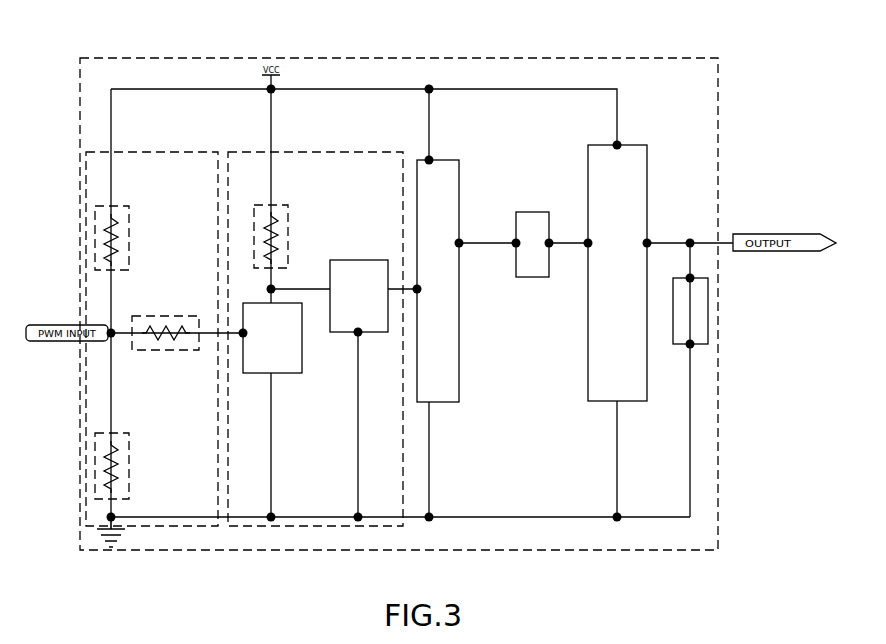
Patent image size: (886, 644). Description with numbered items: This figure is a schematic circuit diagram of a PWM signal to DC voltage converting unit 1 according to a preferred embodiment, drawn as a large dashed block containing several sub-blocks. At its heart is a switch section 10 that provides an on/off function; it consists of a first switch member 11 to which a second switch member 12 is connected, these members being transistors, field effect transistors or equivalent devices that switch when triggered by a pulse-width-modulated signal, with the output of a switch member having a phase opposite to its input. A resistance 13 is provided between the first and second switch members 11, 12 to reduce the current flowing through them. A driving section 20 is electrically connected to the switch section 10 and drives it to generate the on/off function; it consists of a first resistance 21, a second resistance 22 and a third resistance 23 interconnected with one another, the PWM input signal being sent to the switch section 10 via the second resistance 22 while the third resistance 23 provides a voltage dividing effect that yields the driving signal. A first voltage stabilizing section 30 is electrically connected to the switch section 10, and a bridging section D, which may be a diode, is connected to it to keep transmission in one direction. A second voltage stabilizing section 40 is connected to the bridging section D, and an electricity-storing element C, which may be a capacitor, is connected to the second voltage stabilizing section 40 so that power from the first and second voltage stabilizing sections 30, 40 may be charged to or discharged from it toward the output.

The PWM signal to DC voltage converting unit 1 is at (717, 157).
The switch section 10 is at (380, 150).
The first switch member 11 is at (285, 363).
The second switch member 12 is at (372, 315).
The resistance 13 is at (290, 204).
The driving section 20 is at (125, 213).
The first resistance 21 is at (92, 204).
The second resistance 22 is at (150, 316).
The third resistance 23 is at (92, 430).
The first voltage stabilizing section 30 is at (447, 177).
The second voltage stabilizing section 40 is at (637, 150).
The electricity-storing element C is at (702, 305).
The bridging section D is at (540, 265).